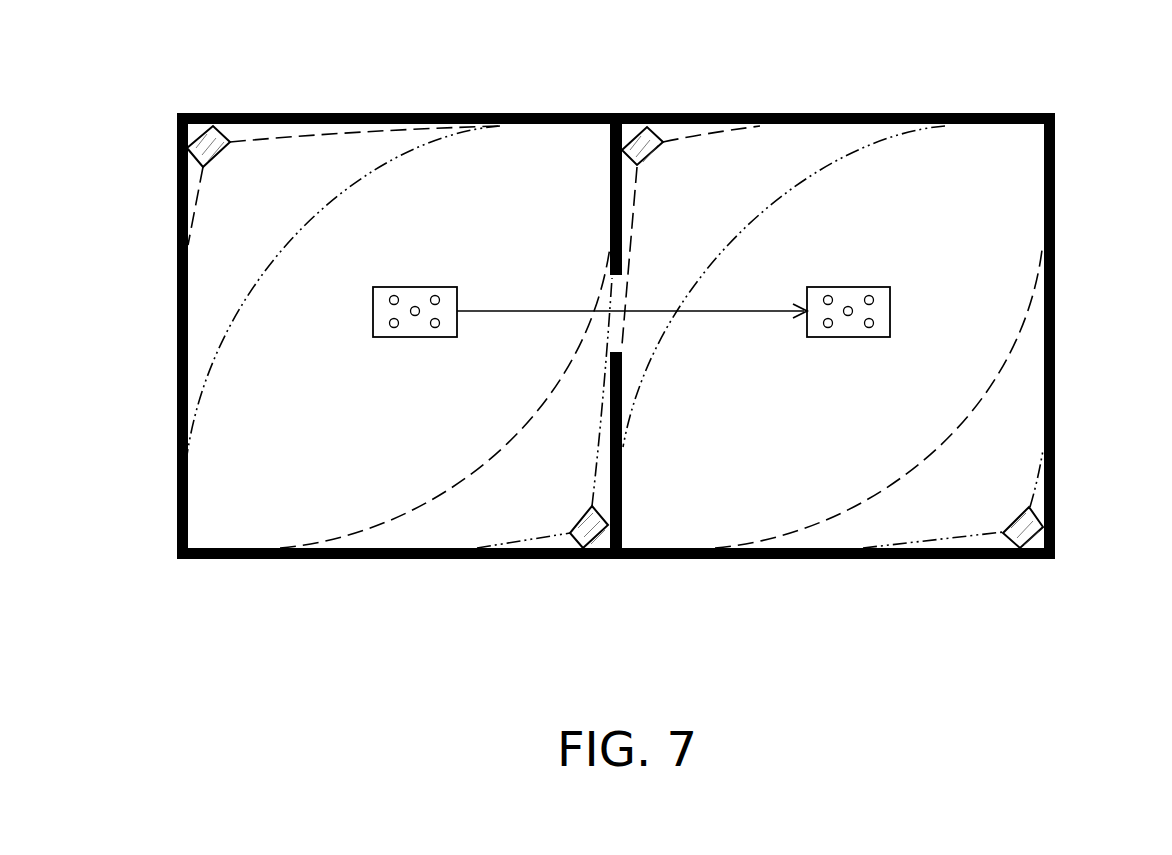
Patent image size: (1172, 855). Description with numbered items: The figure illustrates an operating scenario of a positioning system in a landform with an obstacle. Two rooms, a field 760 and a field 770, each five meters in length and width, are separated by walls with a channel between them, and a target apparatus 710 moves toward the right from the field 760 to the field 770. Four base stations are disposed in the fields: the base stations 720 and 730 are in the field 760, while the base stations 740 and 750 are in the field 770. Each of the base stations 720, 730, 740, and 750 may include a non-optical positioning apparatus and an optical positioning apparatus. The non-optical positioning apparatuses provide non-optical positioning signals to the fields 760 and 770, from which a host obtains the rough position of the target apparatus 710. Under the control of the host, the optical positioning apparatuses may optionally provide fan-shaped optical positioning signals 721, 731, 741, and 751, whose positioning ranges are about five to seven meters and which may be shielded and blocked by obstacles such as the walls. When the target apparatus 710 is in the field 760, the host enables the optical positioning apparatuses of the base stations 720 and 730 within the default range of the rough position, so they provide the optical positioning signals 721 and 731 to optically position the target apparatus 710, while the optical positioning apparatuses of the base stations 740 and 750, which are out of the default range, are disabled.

The target apparatus 710 is at (431, 287).
The base station 720 is at (229, 126).
The optical positioning signal 721 is at (272, 135).
The base station 730 is at (583, 545).
The optical positioning signal 731 is at (418, 153).
The base station 740 is at (663, 126).
The optical positioning signal 741 is at (700, 135).
The base station 750 is at (1010, 545).
The optical positioning signal 751 is at (858, 150).
The field 760 is at (238, 476).
The field 770 is at (988, 200).